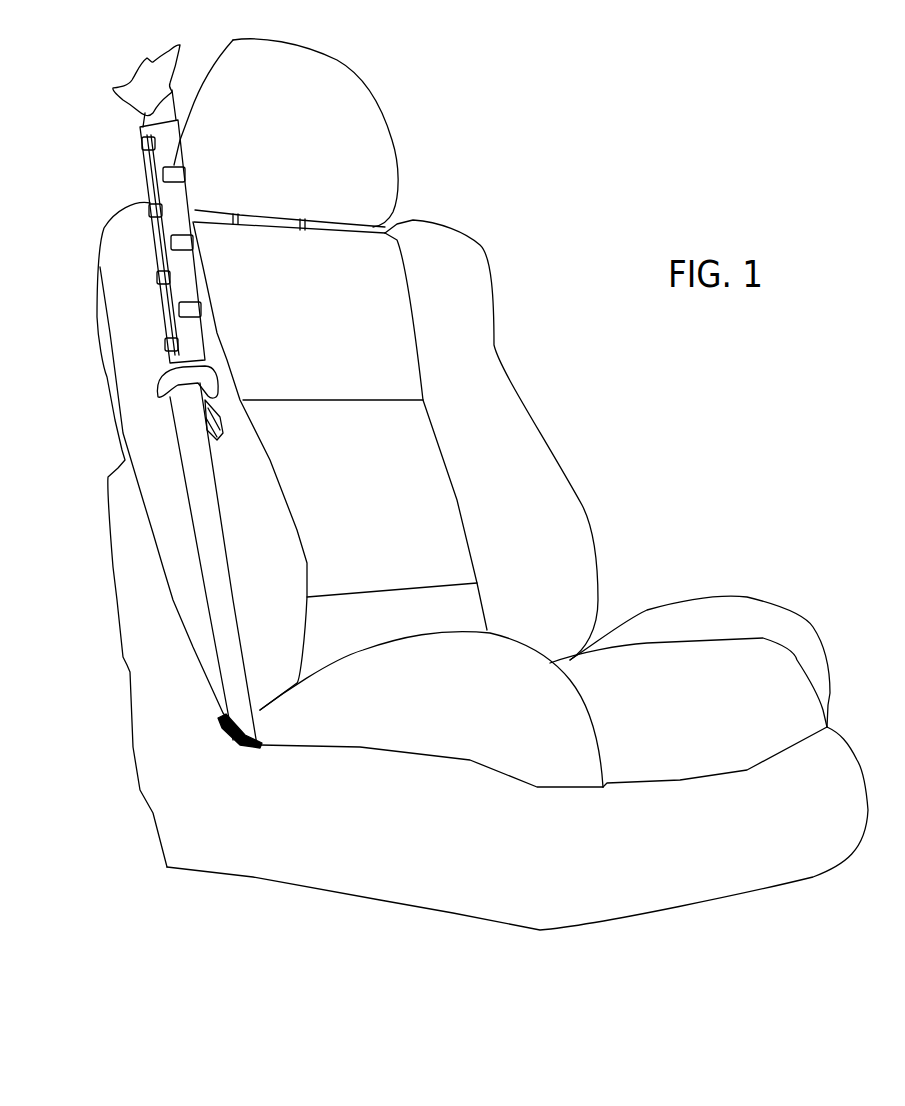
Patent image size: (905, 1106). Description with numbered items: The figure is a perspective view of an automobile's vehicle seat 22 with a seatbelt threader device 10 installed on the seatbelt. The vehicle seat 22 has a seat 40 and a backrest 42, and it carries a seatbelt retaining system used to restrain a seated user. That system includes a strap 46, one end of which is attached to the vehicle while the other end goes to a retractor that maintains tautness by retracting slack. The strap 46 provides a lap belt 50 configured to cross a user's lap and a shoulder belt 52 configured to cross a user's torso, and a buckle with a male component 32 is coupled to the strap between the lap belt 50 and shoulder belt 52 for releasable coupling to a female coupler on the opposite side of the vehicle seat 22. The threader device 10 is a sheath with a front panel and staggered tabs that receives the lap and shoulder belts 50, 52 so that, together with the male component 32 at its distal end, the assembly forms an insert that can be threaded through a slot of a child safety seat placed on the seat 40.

The seatbelt threader device 10 is at (122, 172).
The vehicle seat 22 is at (482, 484).
The male component 32 is at (163, 397).
The seat 40 is at (653, 717).
The backrest 42 is at (333, 307).
The strap 46 is at (216, 666).
The lap belt 50 is at (210, 573).
The shoulder belt 52 is at (177, 368).